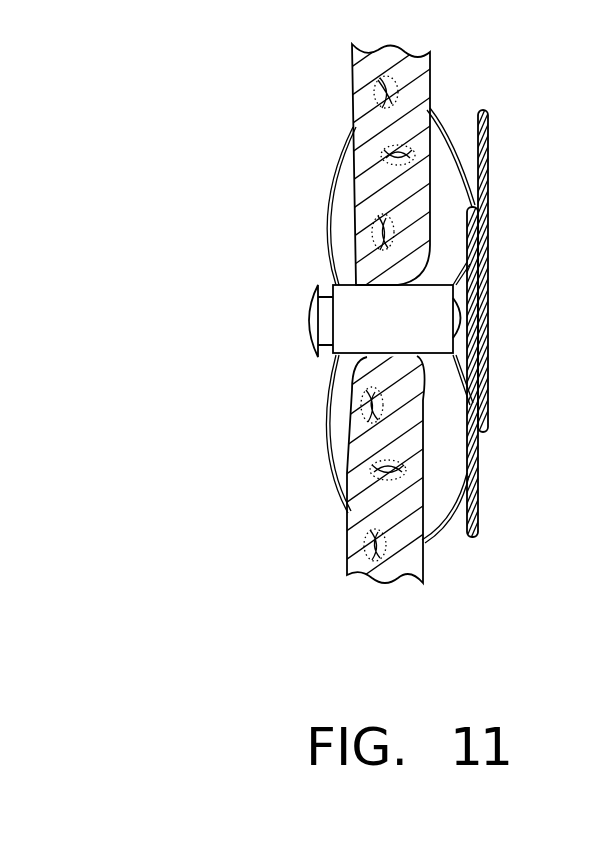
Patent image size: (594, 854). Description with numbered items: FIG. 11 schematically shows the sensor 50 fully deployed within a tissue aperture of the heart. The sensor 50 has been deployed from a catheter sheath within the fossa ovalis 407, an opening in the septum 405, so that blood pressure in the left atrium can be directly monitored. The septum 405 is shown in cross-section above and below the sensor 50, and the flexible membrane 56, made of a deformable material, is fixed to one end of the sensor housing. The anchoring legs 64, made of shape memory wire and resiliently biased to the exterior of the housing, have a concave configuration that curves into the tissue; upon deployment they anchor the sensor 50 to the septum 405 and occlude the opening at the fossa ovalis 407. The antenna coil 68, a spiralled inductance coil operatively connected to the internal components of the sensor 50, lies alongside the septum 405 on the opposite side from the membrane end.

The septum 405 is at (420, 73).
The anchoring legs 64 is at (442, 113).
The antenna coil 68 is at (485, 165).
The sensor 50 is at (305, 285).
The fossa ovalis 407 is at (400, 352).
The flexible membrane 56 is at (462, 312).